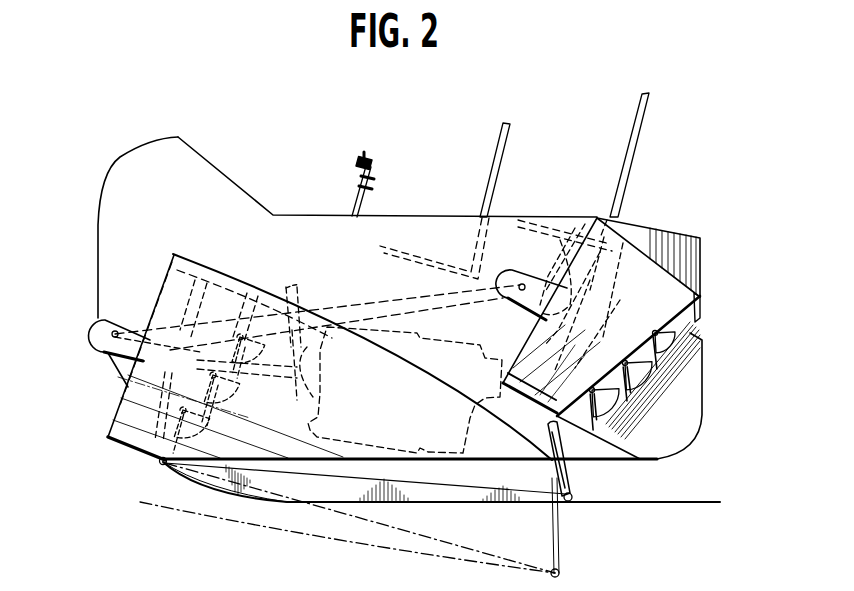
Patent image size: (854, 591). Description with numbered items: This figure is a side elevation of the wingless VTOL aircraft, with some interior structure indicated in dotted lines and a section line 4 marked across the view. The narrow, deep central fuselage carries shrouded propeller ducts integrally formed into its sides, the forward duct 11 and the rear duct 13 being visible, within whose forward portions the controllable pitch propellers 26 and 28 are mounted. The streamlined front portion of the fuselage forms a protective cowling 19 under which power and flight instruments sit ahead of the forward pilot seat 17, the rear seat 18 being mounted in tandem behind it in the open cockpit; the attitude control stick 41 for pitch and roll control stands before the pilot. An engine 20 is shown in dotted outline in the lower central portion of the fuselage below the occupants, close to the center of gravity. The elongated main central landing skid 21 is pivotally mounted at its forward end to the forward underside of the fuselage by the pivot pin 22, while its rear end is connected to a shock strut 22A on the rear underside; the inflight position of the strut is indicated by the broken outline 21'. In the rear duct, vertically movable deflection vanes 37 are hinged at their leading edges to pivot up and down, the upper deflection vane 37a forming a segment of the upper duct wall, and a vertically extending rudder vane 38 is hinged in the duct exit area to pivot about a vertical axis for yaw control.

The section line 4- 4 is at (185, 84).
The shrouded propeller duct 11 is at (215, 276).
The shrouded propeller duct 13 is at (637, 260).
The seat 17 is at (509, 136).
The seat 18 is at (644, 108).
The protective cowling 19 is at (150, 160).
The engine 20 is at (316, 401).
The main central landing skid 21 is at (441, 494).
The shock strut inflight position 21' is at (349, 525).
The pivot pin 22 is at (157, 465).
The shock strut 22A is at (566, 470).
The controllable pitch propeller 26 is at (150, 368).
The controllable pitch propeller 28 is at (578, 265).
The deflection vane 37 is at (214, 422).
The upper deflection vane 37a is at (290, 290).
The rudder vane 38 is at (688, 408).
The attitude control stick 41 is at (354, 196).